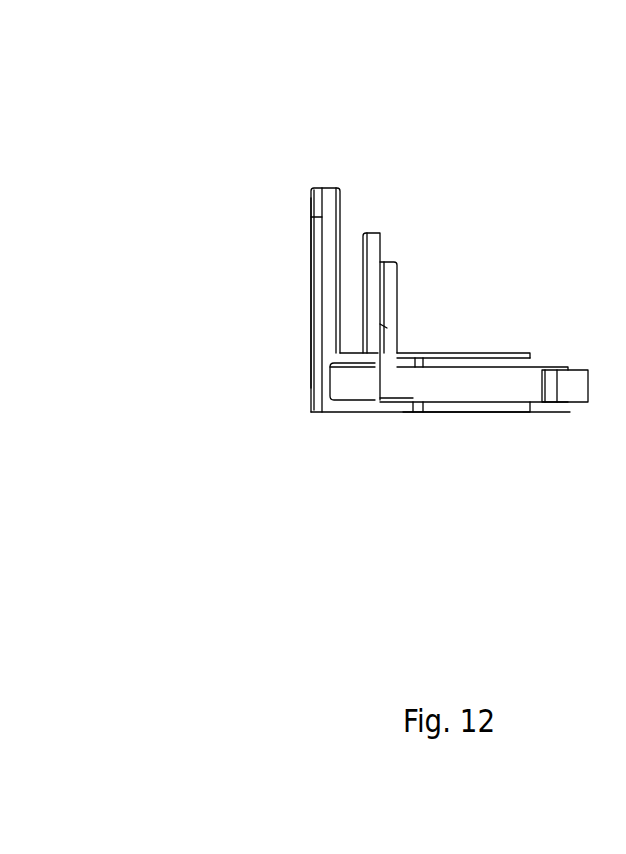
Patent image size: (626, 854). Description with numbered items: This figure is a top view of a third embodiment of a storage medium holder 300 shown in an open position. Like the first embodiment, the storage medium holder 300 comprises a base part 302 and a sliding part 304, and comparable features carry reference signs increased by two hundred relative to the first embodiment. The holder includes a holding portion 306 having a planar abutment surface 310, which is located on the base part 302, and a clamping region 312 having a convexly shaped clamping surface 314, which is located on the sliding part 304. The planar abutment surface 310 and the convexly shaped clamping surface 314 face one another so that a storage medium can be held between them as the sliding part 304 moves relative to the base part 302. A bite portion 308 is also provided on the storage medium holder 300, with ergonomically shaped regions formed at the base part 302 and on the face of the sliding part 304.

The storage medium holder 300 is at (550, 115).
The base part 302 is at (340, 428).
The sliding part 304 is at (569, 328).
The holding portion 306 is at (288, 198).
The bite portion 308 is at (570, 457).
The planar abutment surface 310 is at (345, 196).
The clamping region 312 is at (381, 227).
The convexly shaped clamping surface 314 is at (358, 250).